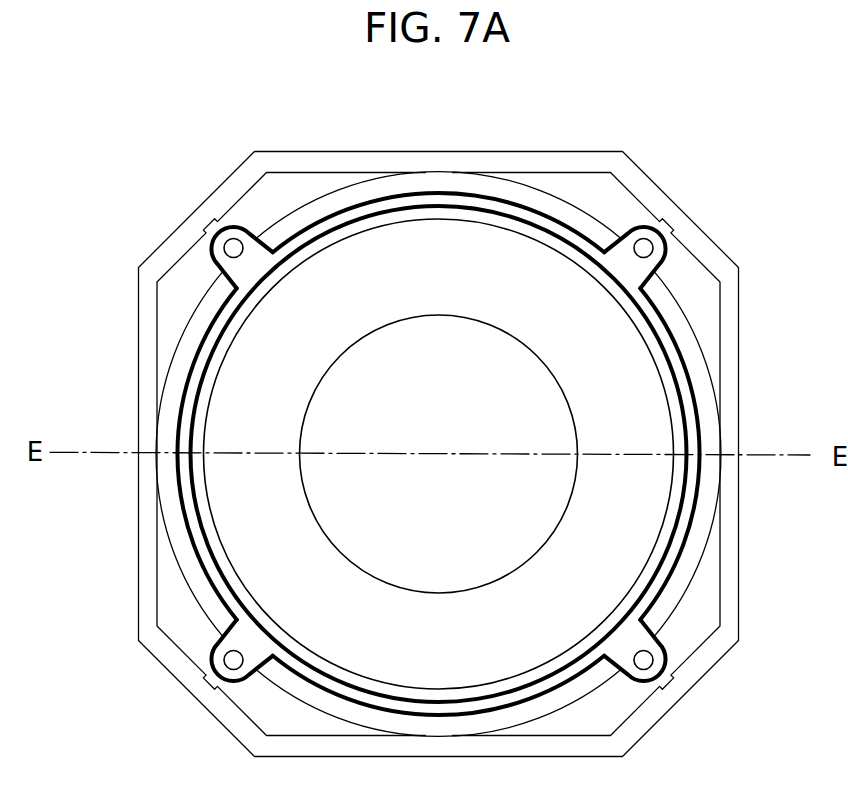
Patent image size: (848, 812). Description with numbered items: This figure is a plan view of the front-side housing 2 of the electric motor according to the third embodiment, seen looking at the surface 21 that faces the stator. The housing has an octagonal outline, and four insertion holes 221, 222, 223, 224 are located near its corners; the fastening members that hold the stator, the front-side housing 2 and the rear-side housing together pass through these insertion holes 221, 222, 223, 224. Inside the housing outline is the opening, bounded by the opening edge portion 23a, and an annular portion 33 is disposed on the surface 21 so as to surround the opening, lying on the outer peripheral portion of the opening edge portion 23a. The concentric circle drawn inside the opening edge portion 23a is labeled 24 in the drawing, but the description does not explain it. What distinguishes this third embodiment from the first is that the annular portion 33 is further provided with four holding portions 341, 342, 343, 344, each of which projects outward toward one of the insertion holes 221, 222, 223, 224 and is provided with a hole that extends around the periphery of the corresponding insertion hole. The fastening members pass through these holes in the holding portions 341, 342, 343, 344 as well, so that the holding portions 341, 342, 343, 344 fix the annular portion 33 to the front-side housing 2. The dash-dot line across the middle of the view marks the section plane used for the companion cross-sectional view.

The front-side housing 2 is at (715, 243).
The surface 21 is at (702, 382).
The annular portion 33 is at (670, 347).
The opening edge portion 23a is at (556, 247).
The dust cap 24 is at (486, 321).
The insertion hole 221 is at (230, 659).
The insertion hole 222 is at (647, 661).
The insertion hole 223 is at (641, 243).
The insertion hole 224 is at (235, 244).
The holding portion 341 is at (243, 688).
The holding portion 342 is at (648, 688).
The holding portion 343 is at (671, 243).
The holding portion 344 is at (213, 259).